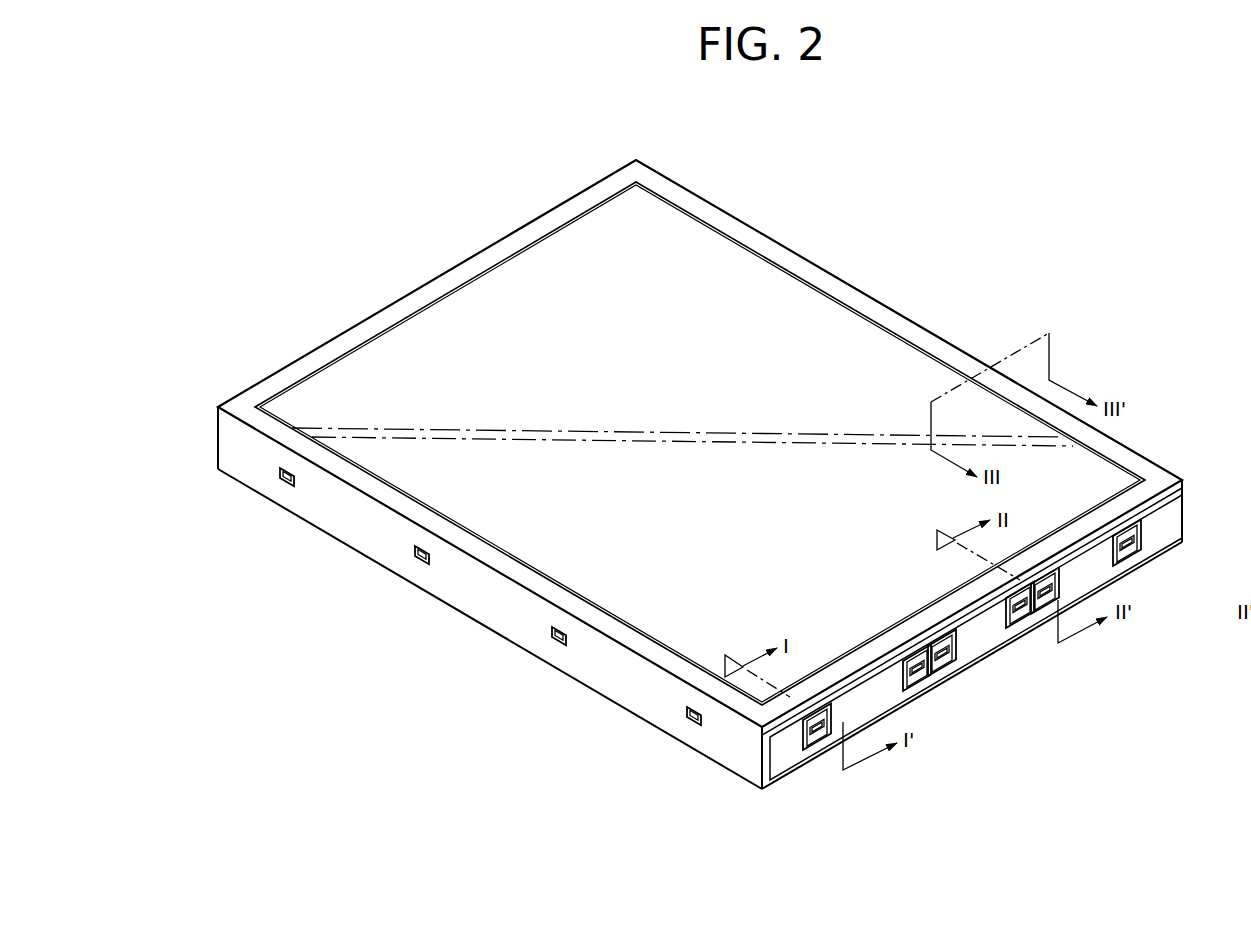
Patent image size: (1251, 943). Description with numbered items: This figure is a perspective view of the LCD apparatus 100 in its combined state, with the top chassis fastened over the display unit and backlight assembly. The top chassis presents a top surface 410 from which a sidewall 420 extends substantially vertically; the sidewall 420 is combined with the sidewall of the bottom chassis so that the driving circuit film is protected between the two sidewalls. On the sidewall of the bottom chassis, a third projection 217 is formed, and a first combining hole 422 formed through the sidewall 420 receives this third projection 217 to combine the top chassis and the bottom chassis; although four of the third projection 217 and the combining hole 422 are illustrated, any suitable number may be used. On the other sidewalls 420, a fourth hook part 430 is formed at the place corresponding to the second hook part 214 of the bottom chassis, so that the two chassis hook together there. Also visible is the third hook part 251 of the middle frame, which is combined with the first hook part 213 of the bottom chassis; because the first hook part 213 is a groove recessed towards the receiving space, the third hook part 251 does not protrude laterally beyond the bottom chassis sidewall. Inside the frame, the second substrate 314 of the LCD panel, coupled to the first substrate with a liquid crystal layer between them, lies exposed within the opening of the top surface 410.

The LCD apparatus 100 is at (735, 101).
The first hook part 213 is at (796, 740).
The second hook part 214 is at (917, 687).
The third projection 217 is at (688, 716).
The third hook part 251 is at (815, 747).
The second substrate 314 is at (1067, 502).
The top surface 410 is at (955, 603).
The sidewall 420 is at (592, 667).
The first combining hole 422 is at (690, 727).
The fourth hook part 430 is at (925, 672).